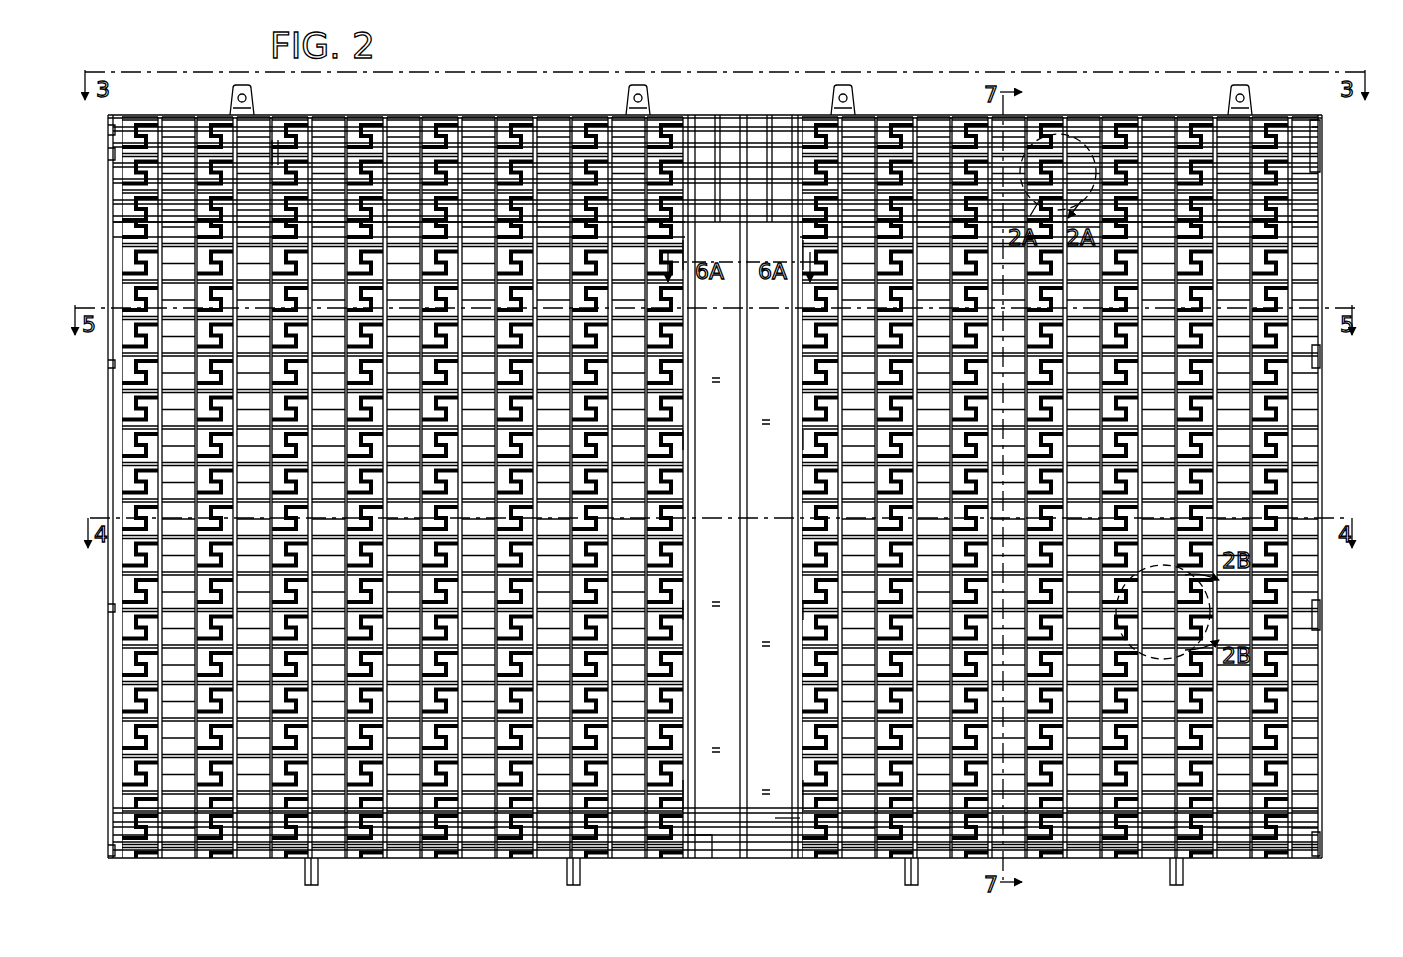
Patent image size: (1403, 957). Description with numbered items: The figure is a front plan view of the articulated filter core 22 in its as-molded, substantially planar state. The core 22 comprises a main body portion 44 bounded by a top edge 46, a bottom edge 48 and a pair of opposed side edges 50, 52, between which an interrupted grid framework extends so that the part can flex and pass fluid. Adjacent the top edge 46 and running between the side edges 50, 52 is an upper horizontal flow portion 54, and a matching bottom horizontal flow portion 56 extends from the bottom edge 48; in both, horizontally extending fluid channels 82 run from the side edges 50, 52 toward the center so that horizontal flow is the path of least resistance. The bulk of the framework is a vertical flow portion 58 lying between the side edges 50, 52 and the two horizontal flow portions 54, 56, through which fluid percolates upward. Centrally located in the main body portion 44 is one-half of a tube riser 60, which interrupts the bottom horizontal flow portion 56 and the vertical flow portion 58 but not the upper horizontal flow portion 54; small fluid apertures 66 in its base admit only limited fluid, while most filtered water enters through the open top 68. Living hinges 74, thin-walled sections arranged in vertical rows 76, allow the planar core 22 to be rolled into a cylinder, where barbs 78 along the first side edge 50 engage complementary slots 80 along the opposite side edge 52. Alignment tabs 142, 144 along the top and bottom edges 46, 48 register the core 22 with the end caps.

The core 22 is at (760, 67).
The main body portion 44 is at (1167, 108).
The top edge 46 is at (440, 104).
The bottom edge 48 is at (450, 862).
The first side edge 50 is at (112, 672).
The second side edge 52 is at (1322, 695).
The upper horizontal flow portion 54 is at (106, 118).
The bottom horizontal flow portion 56 is at (106, 810).
The vertical flow portion 58 is at (1355, 225).
The tube riser half 60 is at (777, 820).
The fluid apertures 66 is at (755, 860).
The open top 68 is at (718, 232).
The living hinges 74 is at (140, 232).
The vertical rows 76 is at (375, 110).
The barbs 78 is at (112, 150).
The slots 80 is at (1323, 160).
The horizontally extending fluid channels 82 is at (275, 150).
The alignment tabs 142 is at (640, 86).
The alignment tabs 144 is at (316, 880).